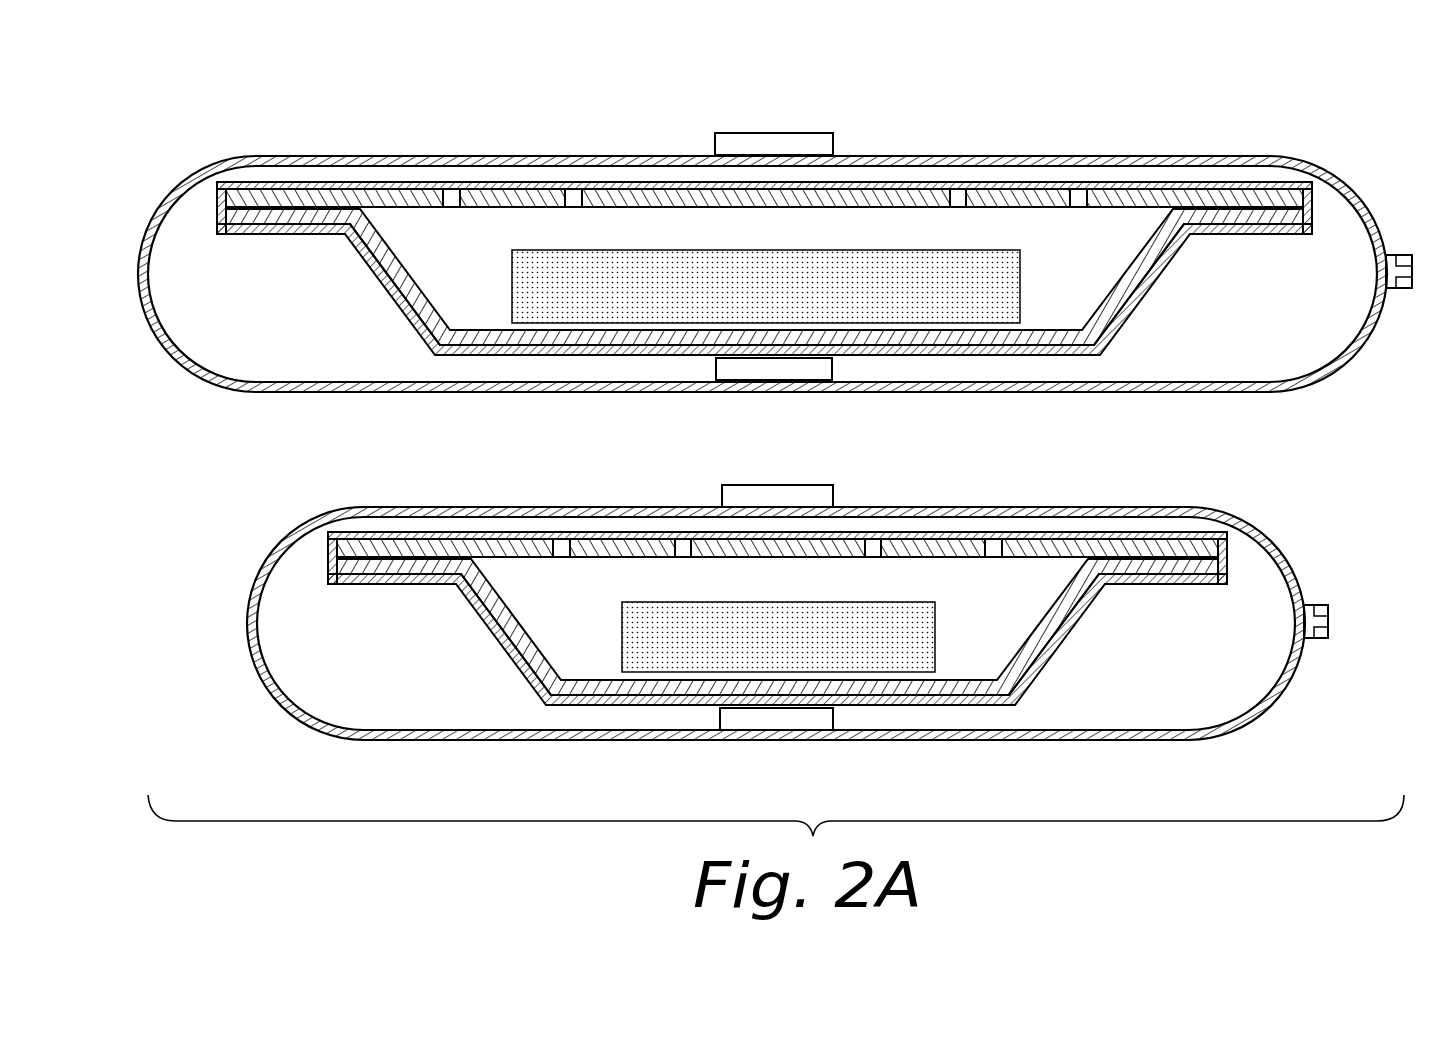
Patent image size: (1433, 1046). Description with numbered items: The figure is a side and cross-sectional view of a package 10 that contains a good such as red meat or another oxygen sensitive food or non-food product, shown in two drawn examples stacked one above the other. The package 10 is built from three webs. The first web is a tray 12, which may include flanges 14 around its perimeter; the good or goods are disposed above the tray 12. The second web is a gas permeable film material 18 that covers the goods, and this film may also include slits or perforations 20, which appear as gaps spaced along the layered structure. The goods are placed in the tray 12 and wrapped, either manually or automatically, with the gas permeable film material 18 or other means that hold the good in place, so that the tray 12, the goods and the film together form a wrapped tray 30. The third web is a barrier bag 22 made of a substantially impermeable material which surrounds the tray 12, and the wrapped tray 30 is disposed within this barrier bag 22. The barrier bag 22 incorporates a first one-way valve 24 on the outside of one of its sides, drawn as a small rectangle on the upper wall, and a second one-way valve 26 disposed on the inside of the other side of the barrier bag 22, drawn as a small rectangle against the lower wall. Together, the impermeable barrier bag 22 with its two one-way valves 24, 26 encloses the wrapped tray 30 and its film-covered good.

The package 10 is at (785, 394).
The tray 12 is at (318, 236).
The flanges 14 is at (282, 236).
The gas permeable film material 18 is at (1158, 184).
The slits or perforations 20 is at (1078, 209).
The barrier bag 22 is at (397, 148).
The first one-way valve 24 is at (740, 133).
The second one-way valve 26 is at (823, 386).
The wrapped tray 30 is at (360, 284).